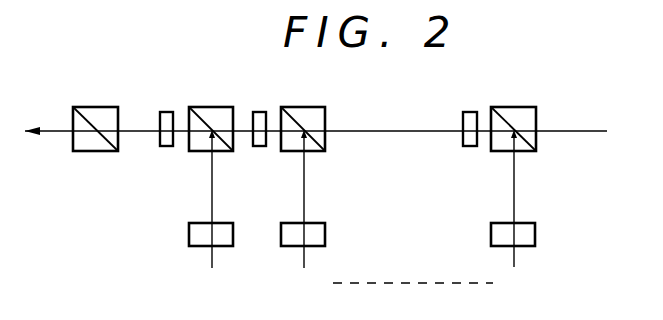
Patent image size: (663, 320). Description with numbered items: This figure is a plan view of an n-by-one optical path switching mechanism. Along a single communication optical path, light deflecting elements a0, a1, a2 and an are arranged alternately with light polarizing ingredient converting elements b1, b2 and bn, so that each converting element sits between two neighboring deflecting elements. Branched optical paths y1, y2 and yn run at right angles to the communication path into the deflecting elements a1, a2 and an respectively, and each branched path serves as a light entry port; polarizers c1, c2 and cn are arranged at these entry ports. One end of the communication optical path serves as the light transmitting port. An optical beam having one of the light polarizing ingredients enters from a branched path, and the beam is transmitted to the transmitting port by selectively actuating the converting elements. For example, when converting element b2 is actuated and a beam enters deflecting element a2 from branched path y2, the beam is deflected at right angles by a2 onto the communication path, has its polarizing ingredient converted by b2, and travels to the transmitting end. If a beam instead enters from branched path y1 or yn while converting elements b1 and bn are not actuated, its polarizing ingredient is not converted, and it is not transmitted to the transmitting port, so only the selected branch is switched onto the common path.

The light deflecting element a0 is at (95, 114).
The light deflecting element a1 is at (211, 172).
The light deflecting element a2 is at (303, 172).
The light deflecting element an is at (513, 171).
The light polarizing ingredient converting element b1 is at (170, 112).
The light polarizing ingredient converting element b2 is at (266, 112).
The light polarizing ingredient converting element bn is at (470, 112).
The polarizer c1 is at (214, 221).
The polarizer c2 is at (307, 221).
The polarizer cn is at (516, 221).
The branched optical path y1 is at (217, 282).
The branched optical path y2 is at (308, 282).
The branched optical path yn is at (518, 282).